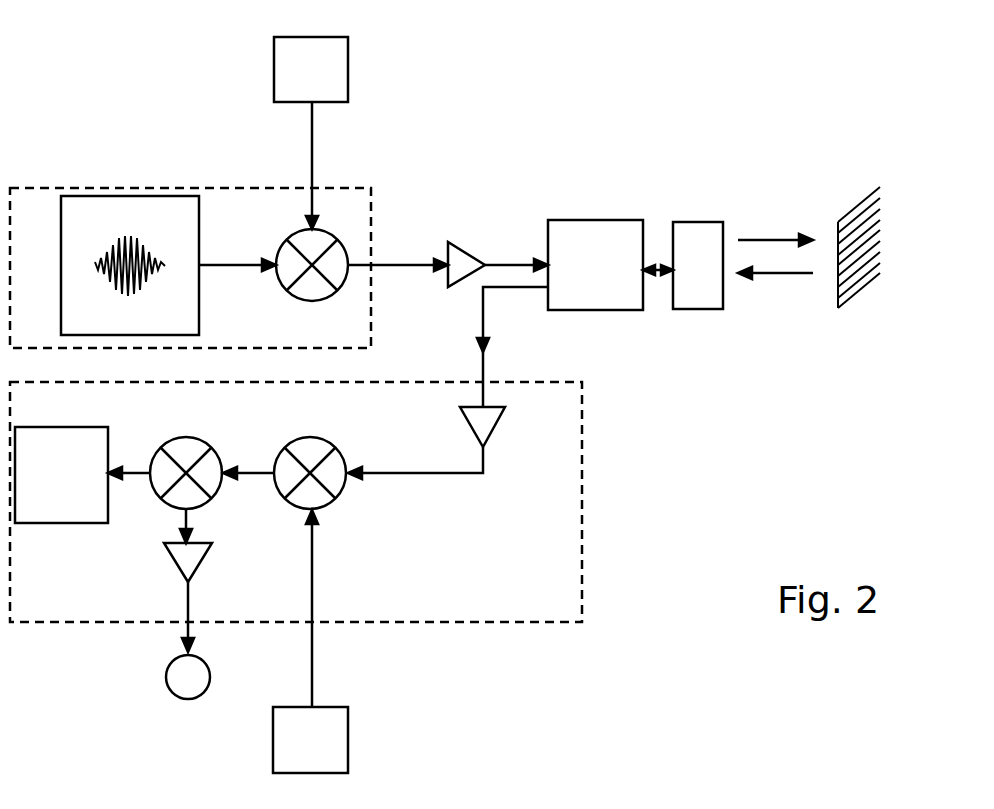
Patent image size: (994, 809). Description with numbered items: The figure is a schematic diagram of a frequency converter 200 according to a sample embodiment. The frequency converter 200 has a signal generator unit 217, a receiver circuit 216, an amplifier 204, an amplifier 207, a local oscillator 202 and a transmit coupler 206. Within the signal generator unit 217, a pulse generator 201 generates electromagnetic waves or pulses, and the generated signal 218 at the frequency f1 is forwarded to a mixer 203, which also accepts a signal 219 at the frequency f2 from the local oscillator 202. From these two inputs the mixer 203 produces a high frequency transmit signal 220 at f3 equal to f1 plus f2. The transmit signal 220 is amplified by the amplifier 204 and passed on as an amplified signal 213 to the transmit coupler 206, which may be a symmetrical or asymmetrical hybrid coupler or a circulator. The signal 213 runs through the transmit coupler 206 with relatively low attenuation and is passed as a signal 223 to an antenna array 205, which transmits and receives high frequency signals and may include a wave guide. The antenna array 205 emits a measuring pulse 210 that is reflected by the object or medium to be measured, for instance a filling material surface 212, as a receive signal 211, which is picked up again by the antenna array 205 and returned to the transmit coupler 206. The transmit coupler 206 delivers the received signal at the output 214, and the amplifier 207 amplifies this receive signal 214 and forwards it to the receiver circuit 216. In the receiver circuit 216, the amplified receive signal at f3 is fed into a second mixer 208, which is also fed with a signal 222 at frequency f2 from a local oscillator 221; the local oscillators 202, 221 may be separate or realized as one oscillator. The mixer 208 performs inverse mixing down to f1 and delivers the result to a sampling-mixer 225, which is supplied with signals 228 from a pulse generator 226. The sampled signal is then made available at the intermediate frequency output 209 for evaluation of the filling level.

The frequency converter 200 is at (656, 488).
The pulse generator 201 is at (140, 196).
The local oscillator 202 is at (348, 65).
The mixer 203 is at (330, 240).
The amplifier 204 is at (465, 250).
The antenna array 205 is at (698, 222).
The transmit coupler 206 is at (608, 220).
The amplifier 207 is at (493, 430).
The mixer 208 is at (335, 500).
The intermediate frequency output 209 is at (166, 677).
The measuring pulse 210 is at (775, 238).
The receive signal 211 is at (775, 276).
The filling material surface 212 is at (862, 205).
The amplified signal 213 is at (495, 262).
The output 214 is at (483, 322).
The receiver circuit 216 is at (510, 623).
The signal generator unit 217 is at (55, 188).
The generated signal 218 is at (225, 268).
The signal 219 is at (310, 194).
The transmit signal 220 is at (358, 268).
The local oscillator 221 is at (273, 745).
The signal 222 is at (310, 583).
The signal 223 is at (652, 266).
The sampling-mixer 225 is at (222, 445).
The pulse generator 226 is at (97, 523).
The signals 228 is at (138, 470).